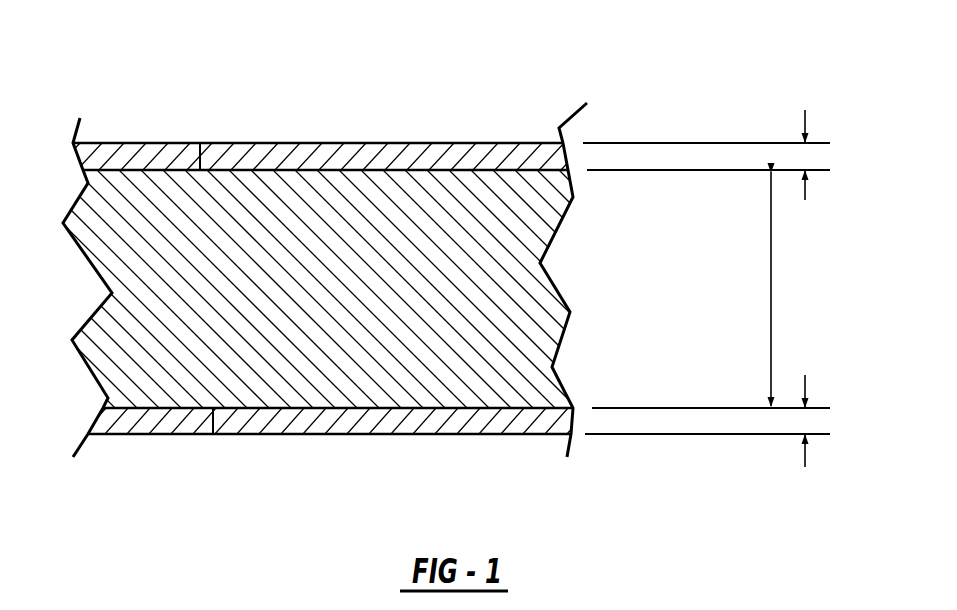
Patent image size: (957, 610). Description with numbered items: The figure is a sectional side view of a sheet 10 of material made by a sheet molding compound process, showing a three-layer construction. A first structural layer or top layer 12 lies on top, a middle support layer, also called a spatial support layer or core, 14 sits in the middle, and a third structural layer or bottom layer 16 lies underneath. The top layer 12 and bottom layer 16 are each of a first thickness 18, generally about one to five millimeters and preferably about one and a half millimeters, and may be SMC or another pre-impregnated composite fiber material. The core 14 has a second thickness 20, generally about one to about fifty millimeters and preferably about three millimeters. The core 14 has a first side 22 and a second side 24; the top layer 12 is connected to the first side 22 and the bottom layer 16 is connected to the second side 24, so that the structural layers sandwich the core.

The sheet 10 is at (88, 103).
The top layer 12 is at (433, 157).
The middle support layer 14 is at (503, 221).
The bottom layer 16 is at (382, 420).
The first thickness 18 is at (805, 115).
The second thickness 20 is at (771, 275).
The first side 22 is at (200, 143).
The second side 24 is at (213, 434).